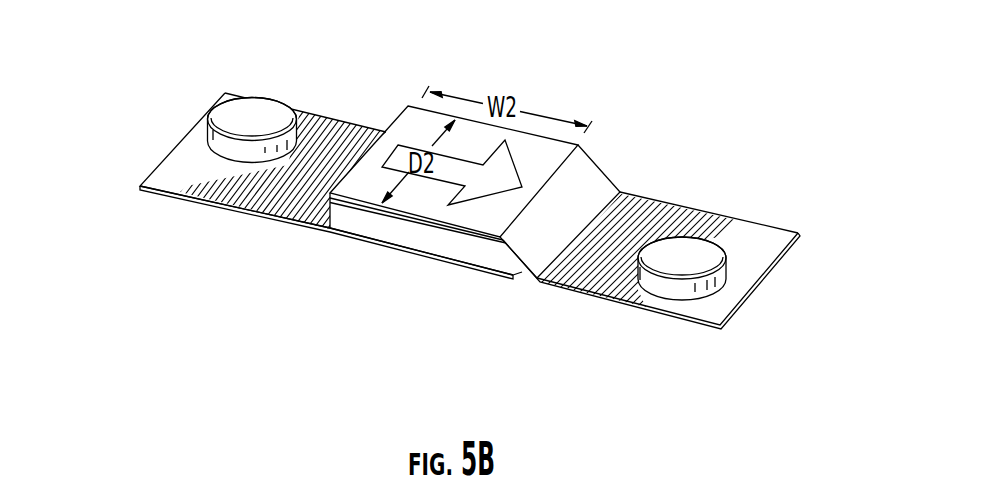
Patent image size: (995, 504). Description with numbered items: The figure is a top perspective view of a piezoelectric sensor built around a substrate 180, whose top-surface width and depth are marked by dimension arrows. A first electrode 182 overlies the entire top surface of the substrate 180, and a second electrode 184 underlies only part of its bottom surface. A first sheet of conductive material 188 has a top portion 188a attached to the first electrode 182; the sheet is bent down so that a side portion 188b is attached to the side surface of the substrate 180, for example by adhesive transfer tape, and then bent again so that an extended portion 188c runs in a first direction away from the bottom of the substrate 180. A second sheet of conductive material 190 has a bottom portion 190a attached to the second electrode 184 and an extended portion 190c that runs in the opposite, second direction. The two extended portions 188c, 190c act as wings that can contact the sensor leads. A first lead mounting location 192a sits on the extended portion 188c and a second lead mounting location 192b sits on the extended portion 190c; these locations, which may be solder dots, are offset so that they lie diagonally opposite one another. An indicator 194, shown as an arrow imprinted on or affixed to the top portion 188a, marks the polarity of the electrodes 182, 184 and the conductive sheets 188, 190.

The substrate 180 is at (340, 213).
The first electrode 182 is at (352, 202).
The second electrode 184 is at (442, 261).
The first sheet of conductive material 188 is at (523, 146).
The top portion of the first sheet of conductive material 188a is at (470, 132).
The side portion of the first sheet of conductive material 188b is at (592, 187).
The extended portion of the first sheet of conductive material 188c is at (688, 223).
The second sheet of conductive material 190 is at (362, 243).
The bottom portion of the second sheet of conductive material 190a is at (398, 247).
The extended portion of the second sheet of conductive material 190c is at (243, 210).
The first lead mounting location 192a is at (703, 258).
The second lead mounting location 192b is at (232, 121).
The indicator 194 is at (457, 158).